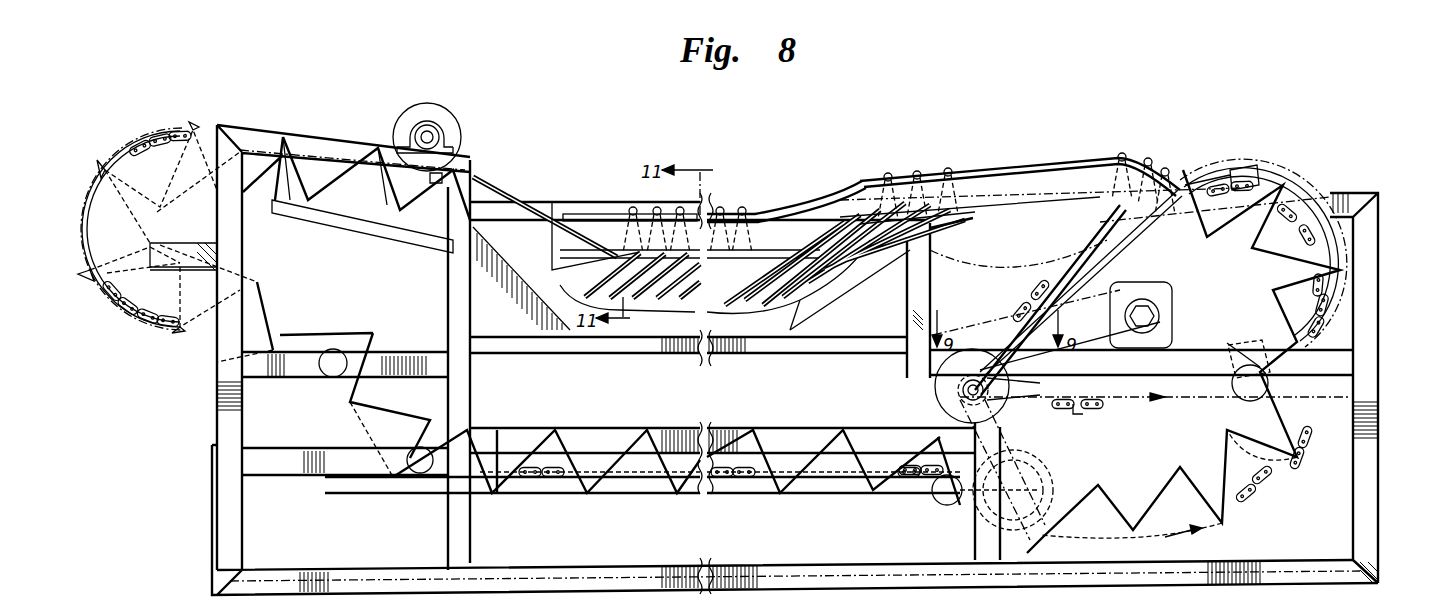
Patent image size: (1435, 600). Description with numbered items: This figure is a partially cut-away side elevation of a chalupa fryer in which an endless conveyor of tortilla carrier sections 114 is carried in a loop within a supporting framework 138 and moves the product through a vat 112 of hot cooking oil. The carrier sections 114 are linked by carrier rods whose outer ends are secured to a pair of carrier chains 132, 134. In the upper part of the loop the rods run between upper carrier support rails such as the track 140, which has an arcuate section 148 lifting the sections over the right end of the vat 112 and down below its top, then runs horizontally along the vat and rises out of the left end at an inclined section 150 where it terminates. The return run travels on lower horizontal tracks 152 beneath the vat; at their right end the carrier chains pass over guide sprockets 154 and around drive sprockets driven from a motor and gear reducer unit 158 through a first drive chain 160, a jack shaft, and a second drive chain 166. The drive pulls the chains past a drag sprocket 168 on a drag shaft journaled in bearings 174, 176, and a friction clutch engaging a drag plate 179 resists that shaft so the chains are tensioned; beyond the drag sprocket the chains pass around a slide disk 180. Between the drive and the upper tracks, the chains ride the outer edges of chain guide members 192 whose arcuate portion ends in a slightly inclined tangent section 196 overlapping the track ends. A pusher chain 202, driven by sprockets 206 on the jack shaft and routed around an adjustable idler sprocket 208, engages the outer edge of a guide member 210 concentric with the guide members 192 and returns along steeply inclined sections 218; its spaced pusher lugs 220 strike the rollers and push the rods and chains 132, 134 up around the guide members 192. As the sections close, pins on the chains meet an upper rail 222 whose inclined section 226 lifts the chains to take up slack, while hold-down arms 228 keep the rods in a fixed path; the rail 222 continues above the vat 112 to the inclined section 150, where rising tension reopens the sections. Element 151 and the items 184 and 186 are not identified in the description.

The vat 112 is at (828, 292).
The tortilla carrier sections 114 is at (262, 303).
The carrier chain 132 is at (490, 172).
The carrier chain 134 is at (155, 135).
The supporting framework 138 is at (1362, 367).
The upper carrier support rail 140 is at (768, 255).
The arcuate section 148 is at (835, 230).
The inclined section 150 is at (578, 243).
The drum 151 is at (990, 523).
The lower horizontal tracks 152 is at (642, 483).
The guide sprockets 154 is at (950, 496).
The motor and gear reducer unit 158 is at (1168, 298).
The first drive chain 160 is at (1100, 366).
The second drive chain 166 is at (1015, 427).
The drag sprocket 168 is at (432, 110).
The bearing 174 is at (913, 476).
The bearing 176 is at (395, 125).
The drag plate 179 is at (462, 130).
The slide disk 180 is at (122, 157).
The roller 184 is at (330, 372).
The roller 186 is at (417, 473).
The chain guide members 192 is at (1325, 283).
The tangent section 196 is at (1030, 205).
The pusher chain 202 is at (1163, 402).
The sprockets 206 is at (990, 393).
The adjustable idler sprocket 208 is at (1262, 402).
The guide member 210 is at (1307, 317).
The steeply inclined sections 218 is at (1093, 268).
The pusher lugs 220 is at (1030, 298).
The upper rail 222 is at (985, 175).
The inclined section 226 is at (1150, 177).
The hold-down arms 228 is at (1205, 178).